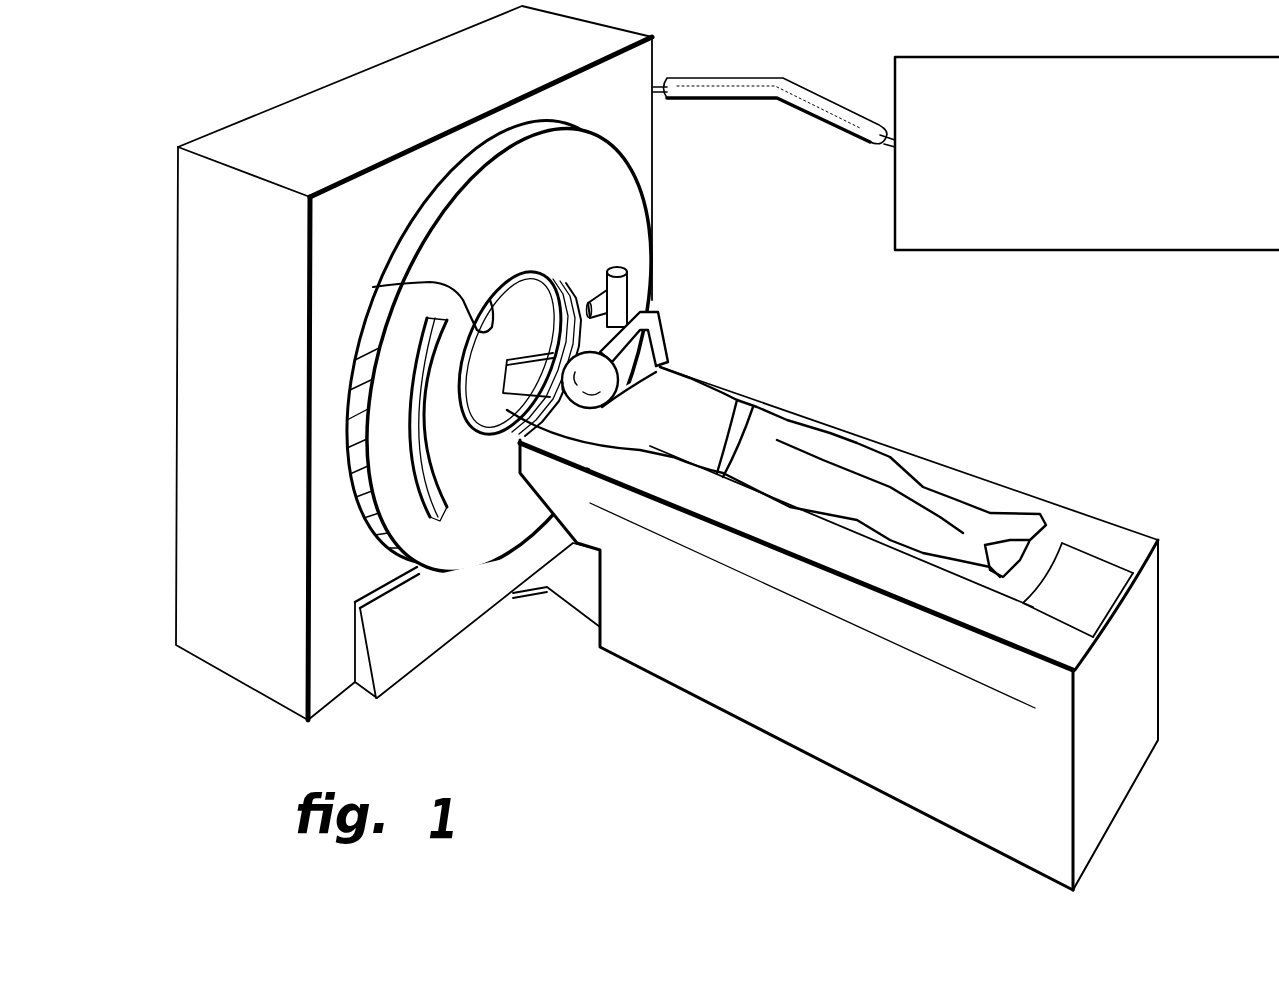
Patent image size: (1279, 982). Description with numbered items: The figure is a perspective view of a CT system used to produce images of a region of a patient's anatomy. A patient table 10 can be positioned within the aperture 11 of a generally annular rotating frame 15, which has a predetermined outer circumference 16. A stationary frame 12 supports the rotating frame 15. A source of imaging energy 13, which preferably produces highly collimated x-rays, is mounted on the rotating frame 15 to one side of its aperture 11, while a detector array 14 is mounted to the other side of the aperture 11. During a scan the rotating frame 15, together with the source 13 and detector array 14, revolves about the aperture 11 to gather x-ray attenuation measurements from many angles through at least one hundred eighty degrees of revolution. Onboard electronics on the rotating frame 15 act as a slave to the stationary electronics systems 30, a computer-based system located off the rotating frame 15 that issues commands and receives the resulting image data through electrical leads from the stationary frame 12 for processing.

The patient table 10 is at (703, 677).
The aperture 11 is at (373, 287).
The stationary frame 12 is at (215, 352).
The source of imaging energy 13 is at (632, 285).
The detector array 14 is at (412, 369).
The rotating frame 15 is at (386, 507).
The outer circumference 16 is at (637, 190).
The stationary electronics systems 30 is at (1119, 233).